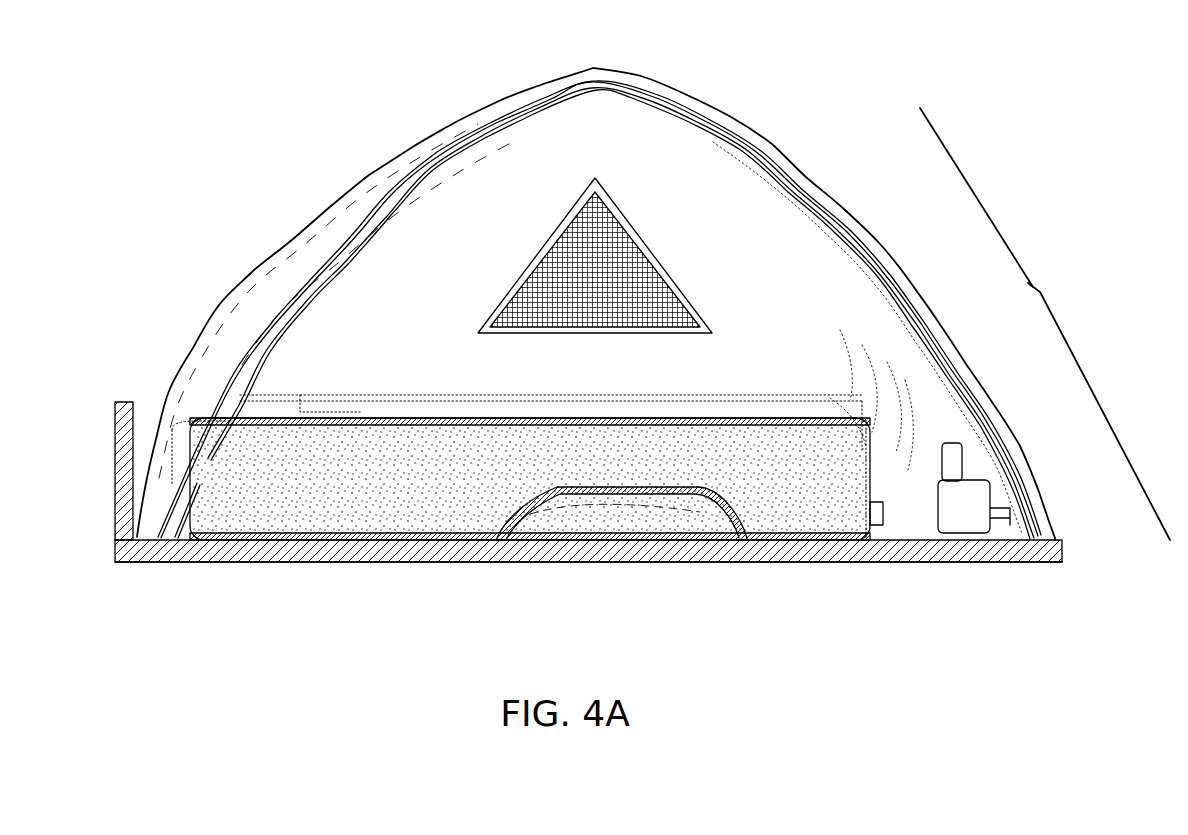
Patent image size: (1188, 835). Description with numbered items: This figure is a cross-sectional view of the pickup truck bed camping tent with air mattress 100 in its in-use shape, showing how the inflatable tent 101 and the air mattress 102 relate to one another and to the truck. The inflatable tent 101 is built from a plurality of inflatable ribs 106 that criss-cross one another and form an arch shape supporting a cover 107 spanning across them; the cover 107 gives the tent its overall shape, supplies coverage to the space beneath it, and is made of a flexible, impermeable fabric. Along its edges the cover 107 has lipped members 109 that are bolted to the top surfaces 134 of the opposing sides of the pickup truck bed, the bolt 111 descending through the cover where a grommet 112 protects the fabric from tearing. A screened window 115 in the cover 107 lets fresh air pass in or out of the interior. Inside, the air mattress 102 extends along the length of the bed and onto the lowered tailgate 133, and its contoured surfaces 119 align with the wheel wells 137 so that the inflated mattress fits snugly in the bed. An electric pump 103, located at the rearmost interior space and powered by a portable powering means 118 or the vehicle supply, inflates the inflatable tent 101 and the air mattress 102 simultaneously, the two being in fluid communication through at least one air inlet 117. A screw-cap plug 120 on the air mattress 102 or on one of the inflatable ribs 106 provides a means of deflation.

The pickup truck bed camping tent with air mattress 100 is at (286, 124).
The inflatable tent 101 is at (1045, 324).
The air mattress 102 is at (865, 465).
The electric pump 103 is at (995, 537).
The inflatable ribs 106 is at (462, 142).
The cover 107 is at (362, 170).
The lipped members 109 is at (373, 392).
The bolt 111 is at (845, 395).
The grommet 112 is at (867, 337).
The screened window 115 is at (658, 266).
The air inlet 117 is at (203, 472).
The portable powering means 118 is at (953, 460).
The contoured surfaces 119 is at (523, 507).
The screw-cap plug 120 is at (877, 517).
The tailgate 133 is at (965, 562).
The top surfaces 134 is at (152, 398).
The wheel wells 137 is at (630, 527).